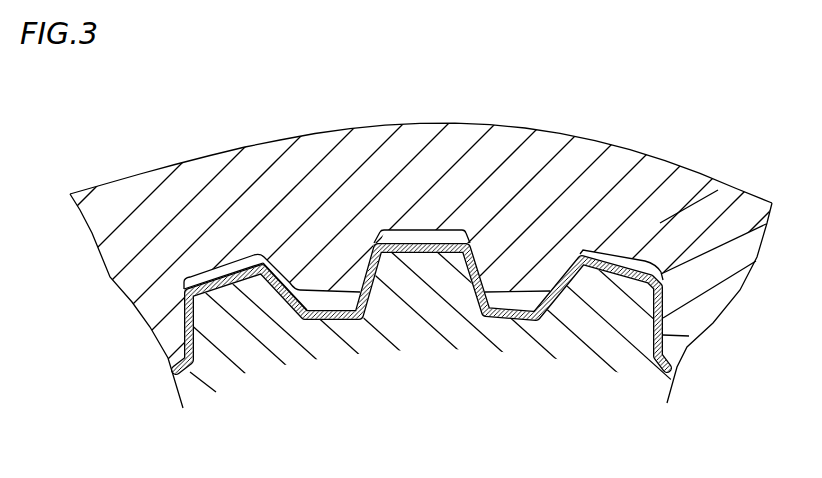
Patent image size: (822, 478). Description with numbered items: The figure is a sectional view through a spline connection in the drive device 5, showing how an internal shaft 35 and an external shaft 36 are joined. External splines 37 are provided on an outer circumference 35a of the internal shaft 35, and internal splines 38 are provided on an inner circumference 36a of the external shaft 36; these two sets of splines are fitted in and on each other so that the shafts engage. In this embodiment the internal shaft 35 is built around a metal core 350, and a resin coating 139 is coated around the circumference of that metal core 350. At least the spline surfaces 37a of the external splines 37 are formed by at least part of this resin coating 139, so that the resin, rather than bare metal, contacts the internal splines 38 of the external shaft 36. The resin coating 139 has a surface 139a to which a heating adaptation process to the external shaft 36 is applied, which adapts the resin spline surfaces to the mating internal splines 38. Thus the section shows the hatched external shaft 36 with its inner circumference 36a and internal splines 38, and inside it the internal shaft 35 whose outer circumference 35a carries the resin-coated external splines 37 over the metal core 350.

The drive device / gear unit 5 is at (757, 155).
The internal shaft 35 is at (647, 373).
The outer circumference 35a is at (642, 270).
The external shaft 36 is at (423, 124).
The inner circumference 36a is at (607, 280).
The external splines 37 is at (256, 333).
The spline surfaces 37a is at (292, 291).
The internal splines 38 is at (339, 267).
The resin coating 139 is at (223, 280).
The surface 139a is at (290, 262).
The metal core 350 is at (423, 303).